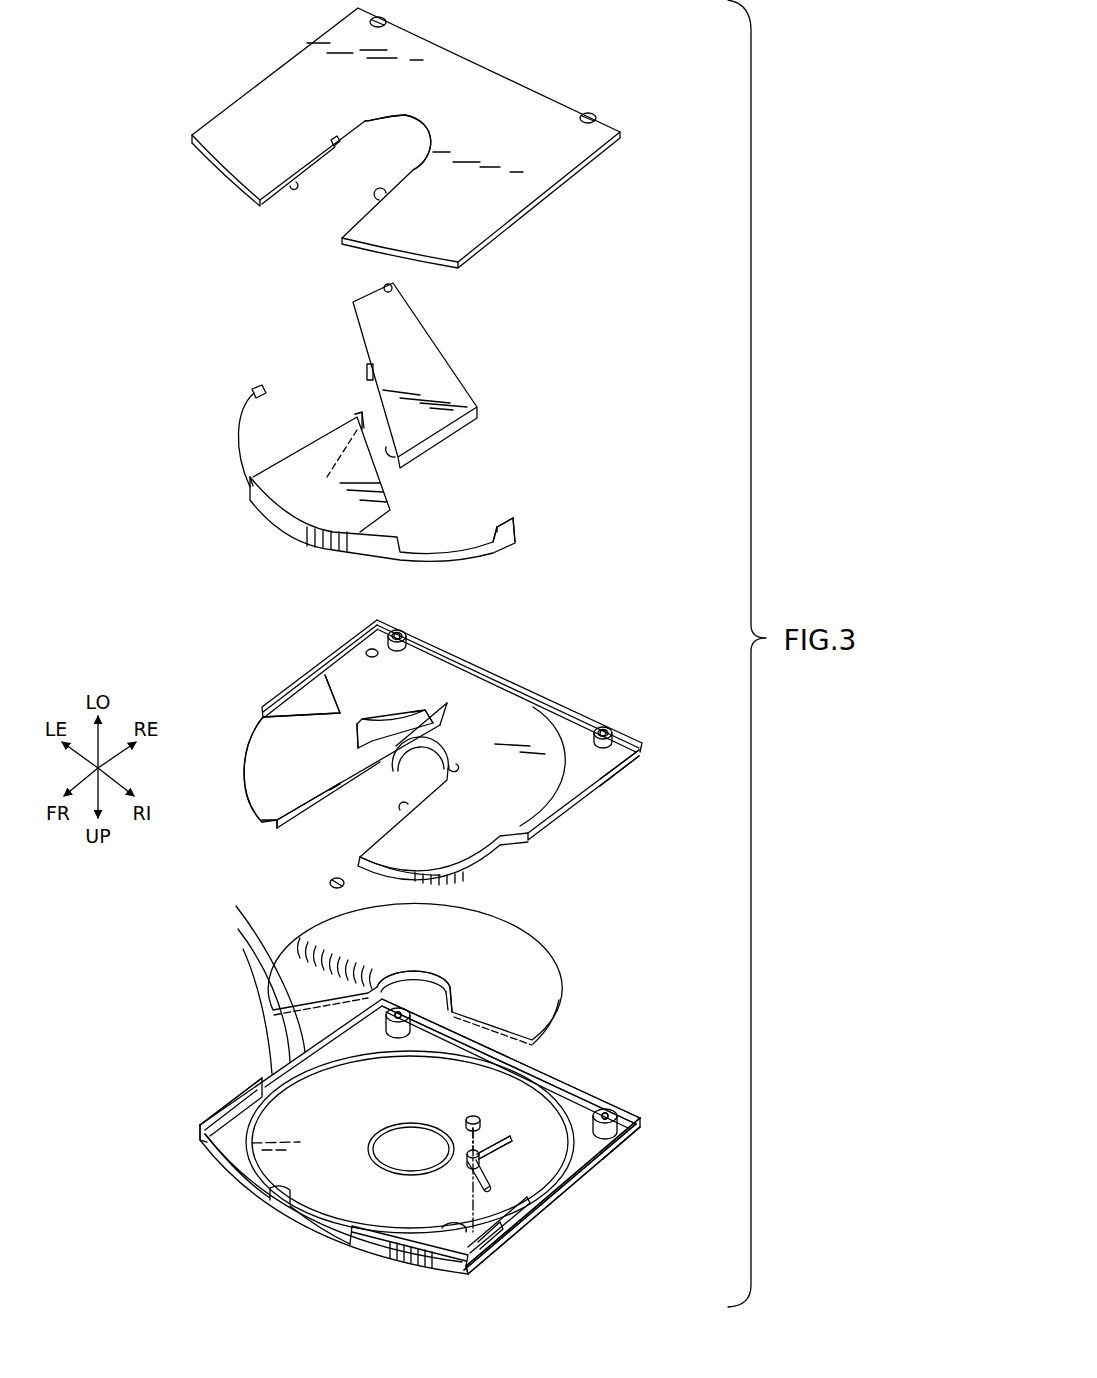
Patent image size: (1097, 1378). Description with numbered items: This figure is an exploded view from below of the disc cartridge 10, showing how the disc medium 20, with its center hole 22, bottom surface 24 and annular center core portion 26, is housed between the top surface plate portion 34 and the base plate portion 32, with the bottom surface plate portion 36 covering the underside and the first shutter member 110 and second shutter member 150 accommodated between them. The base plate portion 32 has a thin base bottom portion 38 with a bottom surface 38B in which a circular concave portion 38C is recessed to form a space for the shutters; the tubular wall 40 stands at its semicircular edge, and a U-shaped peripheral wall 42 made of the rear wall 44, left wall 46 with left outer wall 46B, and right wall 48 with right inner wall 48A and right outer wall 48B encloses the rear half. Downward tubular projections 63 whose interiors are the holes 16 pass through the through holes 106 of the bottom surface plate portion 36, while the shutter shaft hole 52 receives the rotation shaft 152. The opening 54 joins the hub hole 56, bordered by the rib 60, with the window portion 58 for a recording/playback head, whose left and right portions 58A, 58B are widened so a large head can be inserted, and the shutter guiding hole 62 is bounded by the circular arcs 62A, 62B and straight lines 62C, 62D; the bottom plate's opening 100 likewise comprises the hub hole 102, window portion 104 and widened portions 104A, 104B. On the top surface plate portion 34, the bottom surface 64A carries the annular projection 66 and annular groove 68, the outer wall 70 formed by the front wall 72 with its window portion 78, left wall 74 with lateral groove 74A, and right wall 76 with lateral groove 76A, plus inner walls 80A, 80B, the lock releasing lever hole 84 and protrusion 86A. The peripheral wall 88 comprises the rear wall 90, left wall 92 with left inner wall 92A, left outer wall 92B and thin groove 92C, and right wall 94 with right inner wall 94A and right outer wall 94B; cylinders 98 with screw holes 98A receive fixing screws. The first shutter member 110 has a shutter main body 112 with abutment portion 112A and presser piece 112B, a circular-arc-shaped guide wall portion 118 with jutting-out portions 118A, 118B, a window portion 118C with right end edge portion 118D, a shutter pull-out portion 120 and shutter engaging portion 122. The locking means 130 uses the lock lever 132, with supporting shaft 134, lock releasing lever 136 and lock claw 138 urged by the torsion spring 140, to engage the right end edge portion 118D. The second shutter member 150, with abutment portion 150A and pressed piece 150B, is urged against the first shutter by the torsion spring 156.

The disc cartridge 10 is at (667, 172).
The hole for position regulation 16 is at (401, 632).
The disc medium 20 is at (537, 948).
The center hole 22 is at (434, 986).
The bottom surface 24 is at (543, 987).
The center core portion 26 is at (452, 995).
The base plate portion 32 is at (633, 711).
The top surface plate portion 34 is at (651, 1116).
The bottom surface plate portion 36 is at (562, 62).
The base bottom portion 38 is at (284, 798).
The bottom surface 38B is at (408, 848).
The concave portion 38C is at (332, 765).
The tubular wall 40 is at (262, 820).
The peripheral wall 42 is at (506, 666).
The rear wall 44 is at (467, 652).
The left wall 46 is at (463, 871).
The left outer wall 46B is at (293, 688).
The right wall 48 is at (676, 797).
The right inner wall 48A is at (598, 794).
The right outer wall 48B is at (597, 778).
The shutter shaft hole 52 is at (372, 658).
The opening 54 is at (448, 736).
The hub hole 56 is at (406, 785).
The window portion for a recording/playback head 58 is at (340, 802).
The slot lower edge 58A is at (408, 807).
The slot upper edge 58B is at (310, 800).
The rib 60 is at (454, 768).
The shutter guiding hole 62 is at (378, 722).
The circular arc 62A is at (417, 708).
The circular arc 62B is at (449, 704).
The straight line 62C is at (434, 716).
The straight line 62D is at (357, 730).
The tubular projection 63 is at (395, 630).
The bottom surface 64A is at (542, 1165).
The annular projection 66 is at (385, 1136).
The annular groove 68 is at (243, 1145).
The outer wall 70 is at (428, 1269).
The front wall 72 is at (370, 1246).
The left wall 74 is at (215, 1113).
The lateral groove 74A is at (198, 1141).
The right wall 76 is at (509, 1211).
The lateral groove 76A is at (467, 1274).
The window portion 78 is at (283, 1210).
The inner wall 80A is at (212, 1118).
The inner wall 80B is at (410, 1232).
The lock releasing lever hole 84 is at (497, 1231).
The protrusion 86A is at (454, 1231).
The peripheral wall 88 is at (532, 1053).
The rear wall 90 is at (560, 1072).
The left wall 92 is at (180, 892).
The left inner wall 92A is at (238, 912).
The left outer wall 92B is at (247, 958).
The thin groove 92C is at (241, 935).
The right wall 94 is at (684, 1171).
The right inner wall 94A is at (601, 1148).
The right outer wall 94B is at (603, 1164).
The cylinder 98 is at (405, 1032).
The screw hole 98A is at (396, 1033).
The opening 100 is at (343, 170).
The hub hole 102 is at (368, 159).
The window portion for a recording/playback head 104 is at (312, 206).
The widened portion 104A is at (385, 197).
The widened portion 104B is at (292, 183).
The through hole 106 is at (395, 22).
The first shutter member 110 is at (258, 526).
The shutter main body 112 is at (320, 450).
The abutment portion 112A is at (368, 412).
The presser piece 112B is at (318, 466).
The circular-arc-shaped guide wall portion 118 is at (370, 546).
The jutting-out portion 118A is at (258, 479).
The jutting-out portion 118B is at (516, 538).
The window portion 118C is at (433, 541).
The right end edge portion 118D is at (492, 527).
The shutter pull-out portion 120 is at (238, 441).
The shutter engaging portion 122 is at (253, 391).
The locking means 130 is at (502, 1156).
The lock lever 132 is at (486, 1133).
The supporting shaft 134 is at (474, 1162).
The lock releasing lever 136 is at (488, 1179).
The lock claw 138 is at (505, 1141).
The torsion spring 140 is at (467, 1119).
The second shutter member 150 is at (456, 364).
The abutment portion 150A is at (401, 464).
The pressed piece 150B is at (366, 370).
The rotation shaft 152 is at (394, 288).
The torsion spring 156 is at (325, 885).